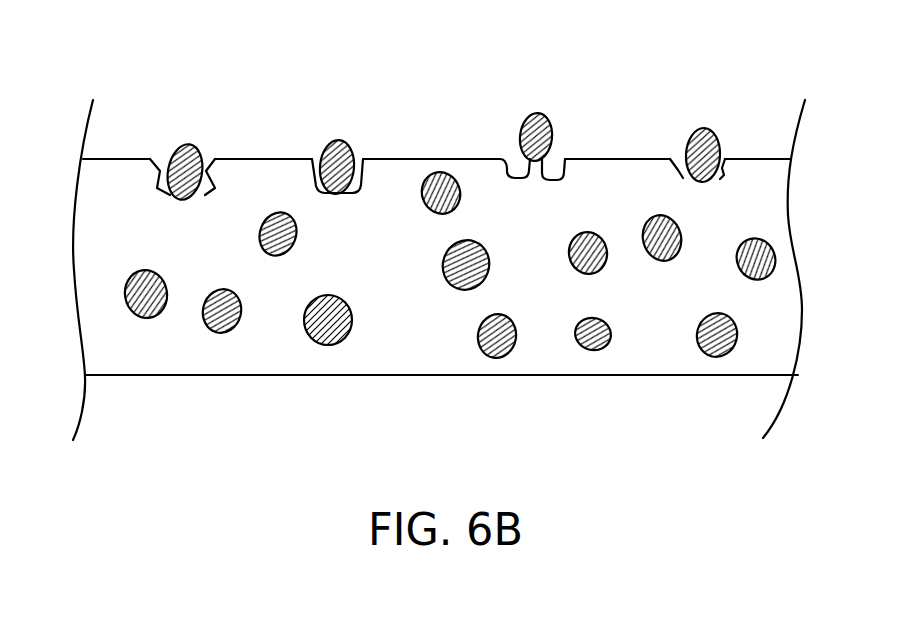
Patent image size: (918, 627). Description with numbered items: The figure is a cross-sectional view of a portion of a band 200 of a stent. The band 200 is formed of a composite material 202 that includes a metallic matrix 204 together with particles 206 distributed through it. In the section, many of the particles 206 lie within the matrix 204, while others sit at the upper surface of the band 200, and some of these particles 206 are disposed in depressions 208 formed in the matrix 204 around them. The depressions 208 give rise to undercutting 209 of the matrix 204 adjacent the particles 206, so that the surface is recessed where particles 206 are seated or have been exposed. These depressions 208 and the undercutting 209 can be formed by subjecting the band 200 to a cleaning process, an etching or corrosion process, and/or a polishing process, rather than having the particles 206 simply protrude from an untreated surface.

The band 200 is at (628, 70).
The composite material 202 is at (415, 335).
The metallic matrix 204 is at (668, 343).
The particles 206 is at (273, 208).
The depressions 208 is at (360, 165).
The undercutting 209 is at (516, 160).